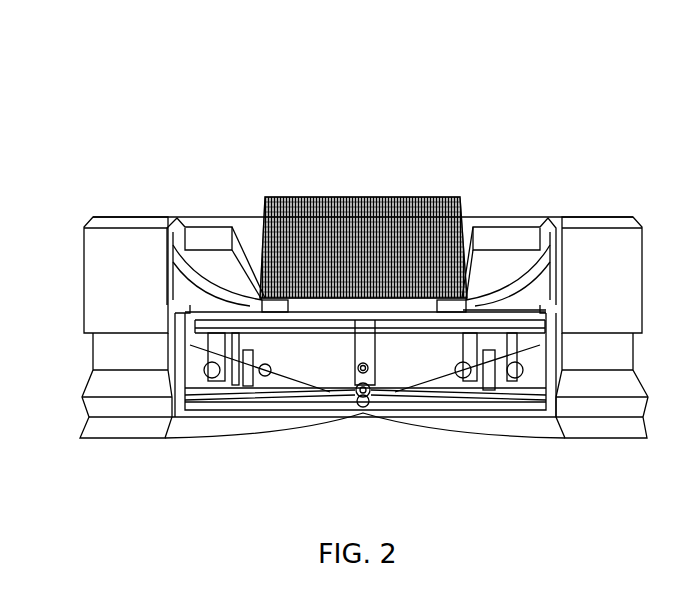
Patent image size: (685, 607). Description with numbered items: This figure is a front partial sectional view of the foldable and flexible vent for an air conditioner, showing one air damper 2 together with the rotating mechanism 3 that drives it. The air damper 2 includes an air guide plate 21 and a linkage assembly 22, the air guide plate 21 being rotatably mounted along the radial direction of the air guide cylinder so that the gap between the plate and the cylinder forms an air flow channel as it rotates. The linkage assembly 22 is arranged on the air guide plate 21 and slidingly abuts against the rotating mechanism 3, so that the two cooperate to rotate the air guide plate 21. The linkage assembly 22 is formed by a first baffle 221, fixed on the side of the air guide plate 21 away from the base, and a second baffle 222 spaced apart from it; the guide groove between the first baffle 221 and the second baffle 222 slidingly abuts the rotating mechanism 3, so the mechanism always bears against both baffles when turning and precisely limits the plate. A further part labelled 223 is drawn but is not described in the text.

The air damper 2 is at (131, 243).
The rotating mechanism 3 is at (462, 197).
The air guide plate 21 is at (262, 305).
The linkage assembly 22 is at (430, 110).
The first baffle 221 is at (348, 353).
The second baffle 222 is at (377, 362).
The inclined plate 223 is at (373, 385).